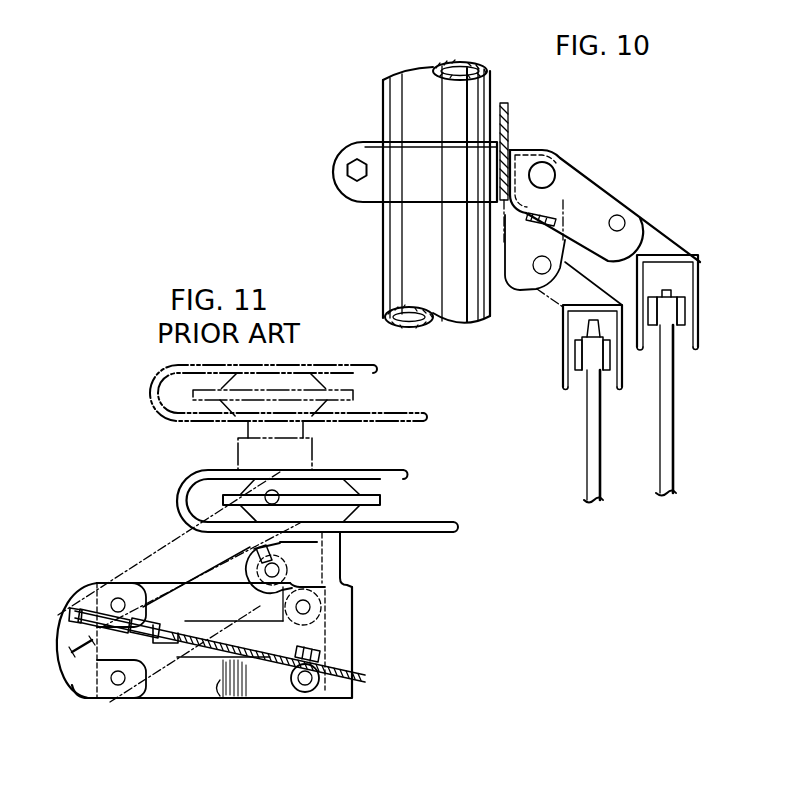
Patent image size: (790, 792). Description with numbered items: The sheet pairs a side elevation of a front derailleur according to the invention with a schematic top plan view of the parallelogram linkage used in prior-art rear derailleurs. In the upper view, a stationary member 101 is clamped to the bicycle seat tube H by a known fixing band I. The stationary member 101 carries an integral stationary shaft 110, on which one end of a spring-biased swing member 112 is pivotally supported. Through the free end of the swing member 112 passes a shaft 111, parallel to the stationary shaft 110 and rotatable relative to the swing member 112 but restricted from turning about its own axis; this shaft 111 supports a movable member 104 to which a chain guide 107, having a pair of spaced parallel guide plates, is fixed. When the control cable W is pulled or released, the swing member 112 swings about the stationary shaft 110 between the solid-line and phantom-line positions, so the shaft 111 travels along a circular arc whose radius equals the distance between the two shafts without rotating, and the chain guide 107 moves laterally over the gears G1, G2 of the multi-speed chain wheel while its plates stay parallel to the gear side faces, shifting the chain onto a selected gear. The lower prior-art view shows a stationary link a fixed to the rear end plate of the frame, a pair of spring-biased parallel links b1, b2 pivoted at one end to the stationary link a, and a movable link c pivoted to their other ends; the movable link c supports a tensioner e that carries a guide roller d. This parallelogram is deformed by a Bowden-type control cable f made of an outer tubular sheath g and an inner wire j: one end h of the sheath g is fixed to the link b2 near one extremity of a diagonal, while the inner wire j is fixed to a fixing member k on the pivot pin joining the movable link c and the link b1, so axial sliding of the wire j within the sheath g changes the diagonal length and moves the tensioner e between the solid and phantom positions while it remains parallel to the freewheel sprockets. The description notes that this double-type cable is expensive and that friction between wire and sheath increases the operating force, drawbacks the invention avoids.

In FIG. 10, the bicycle frame tube H is at (410, 252).
In FIG. 10, the fixing band I is at (417, 140).
In FIG. 10, the control cable W is at (510, 122).
In FIG. 10, the stationary member 101 is at (530, 148).
In FIG. 10, the stationary shaft 110 is at (543, 176).
In FIG. 10, the swing member 112 is at (602, 192).
In FIG. 10, the shaft 111 is at (618, 222).
In FIG. 10, the movable member 104 is at (676, 243).
In FIG. 10, the chain guide 107 is at (699, 304).
In FIG. 10, the gear of multi-speed chain wheel G1 is at (585, 432).
In FIG. 10, the gear of multi-speed chain wheel G2 is at (675, 432).
In FIG. 11, the tensioner e is at (366, 470).
In FIG. 11, the guide roller d is at (383, 499).
In FIG. 11, the parallel link b2 is at (157, 580).
In FIG. 11, the Bowden-type control cable f is at (92, 608).
In FIG. 11, the stationary link a is at (72, 670).
In FIG. 11, the outer tubular sheath g is at (100, 683).
In FIG. 11, the end of tubular sheath h is at (140, 645).
In FIG. 11, the parallel link b1 is at (230, 676).
In FIG. 11, the inner wire j is at (249, 683).
In FIG. 11, the fixing member k is at (312, 684).
In FIG. 11, the movable link c is at (338, 627).